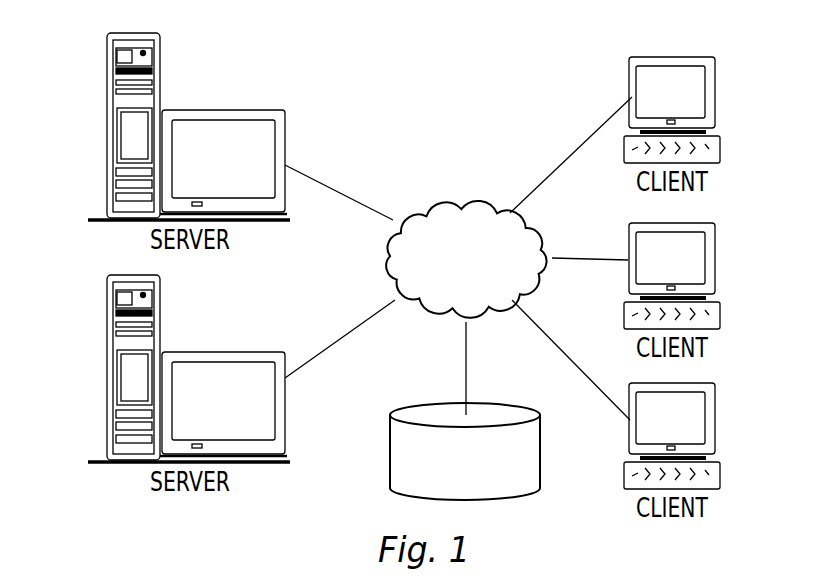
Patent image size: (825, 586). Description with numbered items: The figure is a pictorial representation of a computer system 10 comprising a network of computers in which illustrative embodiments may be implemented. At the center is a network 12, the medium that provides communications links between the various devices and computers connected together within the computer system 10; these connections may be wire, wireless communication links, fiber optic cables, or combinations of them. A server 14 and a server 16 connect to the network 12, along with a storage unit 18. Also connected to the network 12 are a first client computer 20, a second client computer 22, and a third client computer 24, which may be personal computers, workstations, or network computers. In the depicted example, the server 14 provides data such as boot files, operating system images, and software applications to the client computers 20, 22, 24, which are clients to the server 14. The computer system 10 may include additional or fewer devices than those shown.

The computer system 10 is at (518, 87).
The network 12 is at (432, 200).
The server 14 is at (107, 128).
The server 16 is at (107, 372).
The storage unit 18 is at (390, 460).
The first client computer 20 is at (714, 95).
The second client computer 22 is at (714, 260).
The third client computer 24 is at (714, 420).